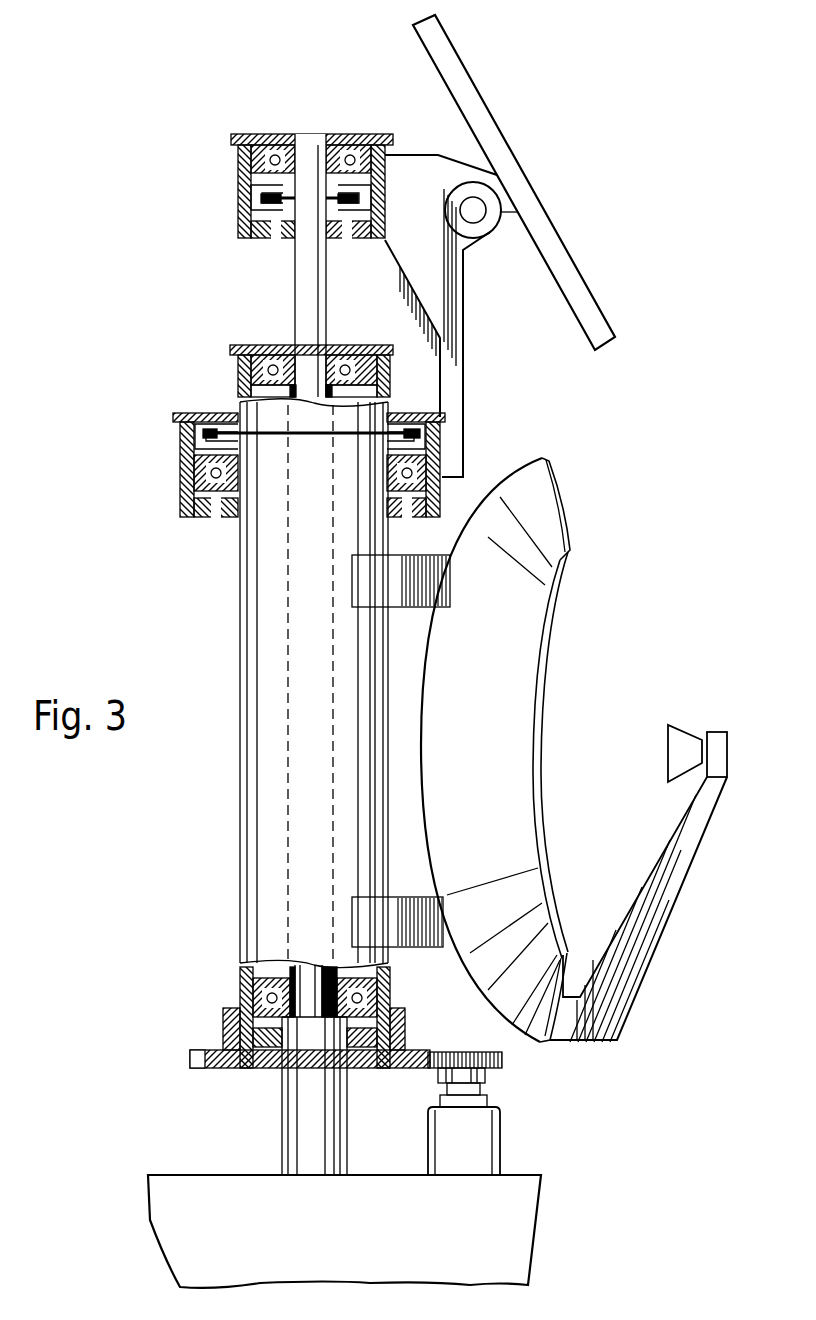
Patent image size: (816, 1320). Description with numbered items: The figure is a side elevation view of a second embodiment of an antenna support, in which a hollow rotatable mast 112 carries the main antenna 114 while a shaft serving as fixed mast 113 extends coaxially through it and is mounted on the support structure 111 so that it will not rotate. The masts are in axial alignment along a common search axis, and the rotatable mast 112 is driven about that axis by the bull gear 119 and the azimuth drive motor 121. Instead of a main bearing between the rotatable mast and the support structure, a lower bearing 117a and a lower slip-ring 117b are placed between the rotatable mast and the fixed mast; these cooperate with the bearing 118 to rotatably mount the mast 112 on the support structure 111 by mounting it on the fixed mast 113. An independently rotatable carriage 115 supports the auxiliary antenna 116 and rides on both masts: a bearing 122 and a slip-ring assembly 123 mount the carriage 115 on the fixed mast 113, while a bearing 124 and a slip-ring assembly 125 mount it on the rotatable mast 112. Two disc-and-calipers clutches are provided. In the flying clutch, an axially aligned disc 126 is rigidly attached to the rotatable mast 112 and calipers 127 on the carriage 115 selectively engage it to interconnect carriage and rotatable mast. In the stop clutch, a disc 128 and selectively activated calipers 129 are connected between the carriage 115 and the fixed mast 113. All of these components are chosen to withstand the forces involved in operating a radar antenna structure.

The support structure 111 is at (193, 1175).
The rotatable mast 112 is at (252, 633).
The fixed mast 113 is at (305, 300).
The main antenna 114 is at (570, 537).
The carriage 115 is at (458, 312).
The auxiliary antenna 116 is at (507, 137).
The lower bearing 117a is at (248, 982).
The lower slip-ring 117b is at (277, 1052).
The bearing 118 is at (348, 362).
The bull gear 119 is at (198, 1052).
The azimuth drive motor 121 is at (487, 1135).
The bearing 122 is at (180, 476).
The slip-ring assembly 123 is at (200, 520).
The bearing 124 is at (262, 143).
The slip-ring assembly 125 is at (262, 240).
The disc 126 is at (207, 413).
The calipers 127 is at (180, 434).
The disc 128 is at (258, 193).
The calipers 129 is at (255, 205).